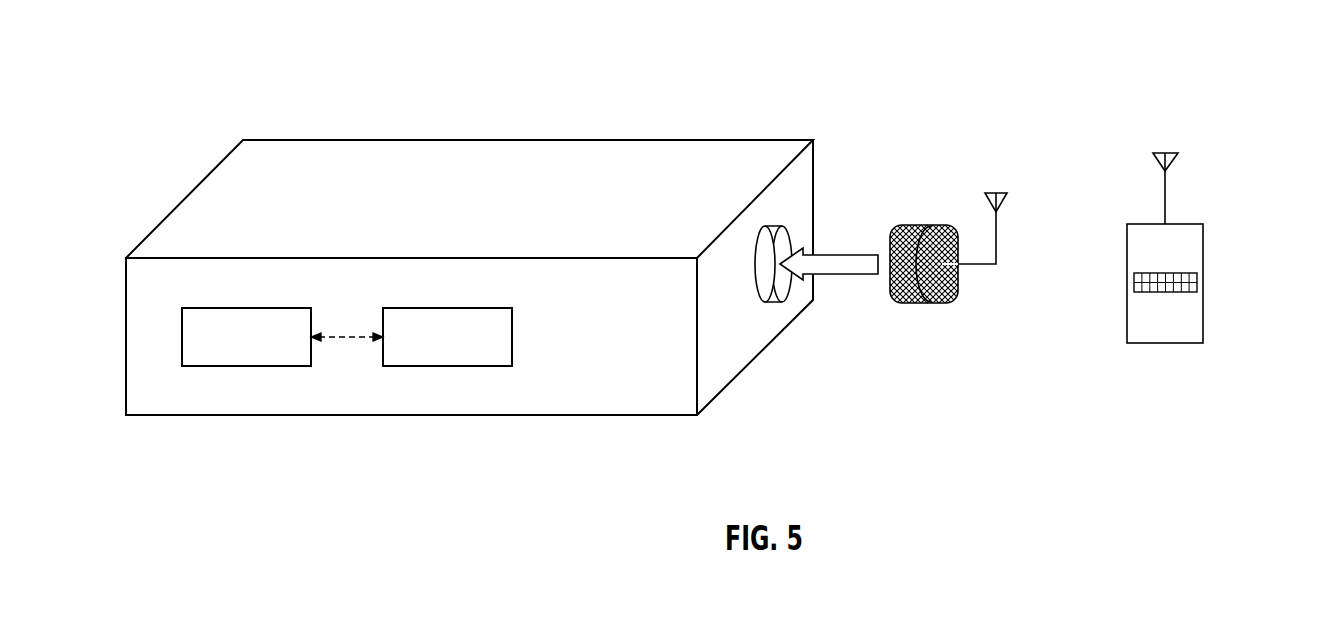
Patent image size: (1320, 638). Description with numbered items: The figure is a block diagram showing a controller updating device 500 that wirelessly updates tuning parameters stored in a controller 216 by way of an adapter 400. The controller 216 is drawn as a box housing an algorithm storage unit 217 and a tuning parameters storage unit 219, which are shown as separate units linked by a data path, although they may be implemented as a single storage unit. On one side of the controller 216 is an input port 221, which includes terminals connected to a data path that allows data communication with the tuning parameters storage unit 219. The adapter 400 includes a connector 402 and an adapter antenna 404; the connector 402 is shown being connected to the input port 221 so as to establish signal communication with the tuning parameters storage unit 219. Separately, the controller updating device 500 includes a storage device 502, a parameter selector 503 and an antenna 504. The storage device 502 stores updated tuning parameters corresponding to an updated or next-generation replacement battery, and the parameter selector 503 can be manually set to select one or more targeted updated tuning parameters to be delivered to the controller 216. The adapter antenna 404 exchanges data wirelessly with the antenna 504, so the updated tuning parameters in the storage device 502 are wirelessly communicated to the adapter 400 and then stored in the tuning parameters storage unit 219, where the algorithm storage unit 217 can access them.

The controller 216 is at (309, 132).
The algorithm storage unit 217 is at (266, 351).
The tuning parameters storage unit 219 is at (468, 351).
The input port 221 is at (784, 281).
The adapter 400 is at (917, 257).
The connector 402 is at (920, 303).
The adapter antenna 404 is at (1000, 191).
The controller updating device 500 is at (1203, 248).
The storage device 502 is at (1165, 344).
The parameter selector 503 is at (1198, 283).
The antenna 504 is at (1163, 151).